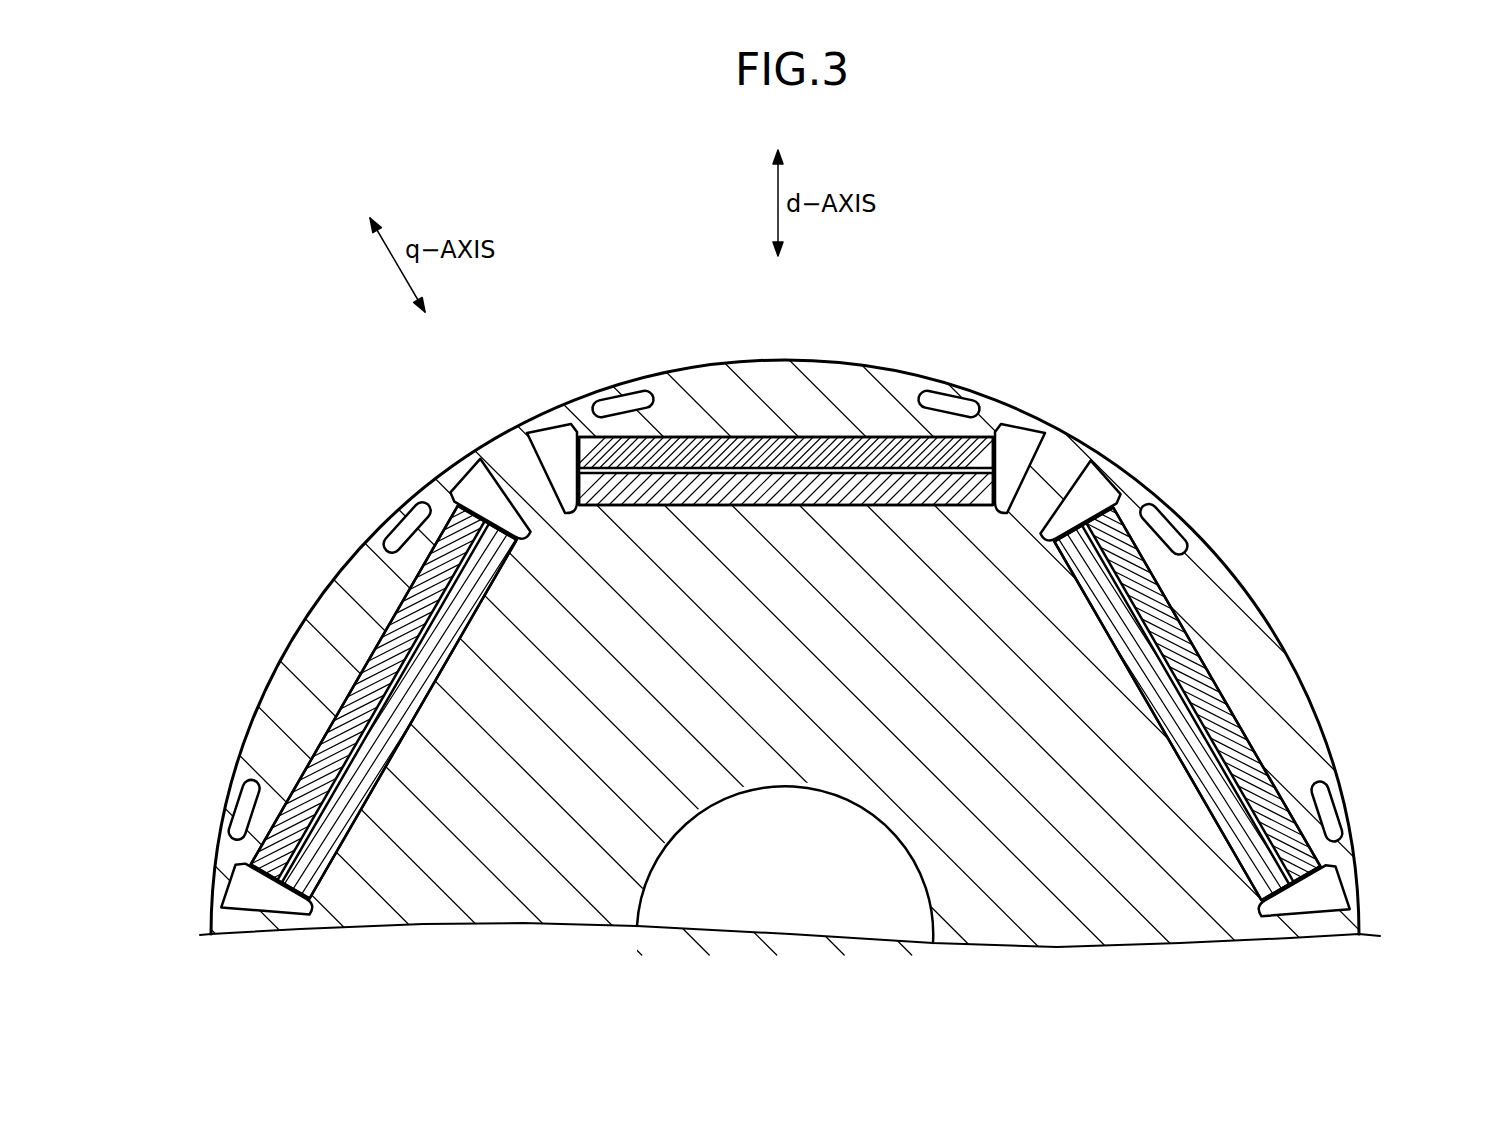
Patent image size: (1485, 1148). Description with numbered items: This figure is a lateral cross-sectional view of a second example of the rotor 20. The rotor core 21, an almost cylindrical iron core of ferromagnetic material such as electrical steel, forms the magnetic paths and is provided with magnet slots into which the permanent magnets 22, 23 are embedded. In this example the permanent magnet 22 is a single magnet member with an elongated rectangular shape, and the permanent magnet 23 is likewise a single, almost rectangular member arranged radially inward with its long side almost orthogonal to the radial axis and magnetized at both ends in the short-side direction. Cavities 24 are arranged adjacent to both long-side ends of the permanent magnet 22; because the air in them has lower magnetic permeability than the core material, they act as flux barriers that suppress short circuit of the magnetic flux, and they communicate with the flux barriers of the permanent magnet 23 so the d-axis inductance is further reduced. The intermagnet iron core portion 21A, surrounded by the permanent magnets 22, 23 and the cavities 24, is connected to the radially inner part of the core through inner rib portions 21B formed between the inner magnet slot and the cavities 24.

The rotor 20 is at (264, 168).
The rotor core 21 is at (720, 386).
The intermagnet iron core portion 21A is at (775, 469).
The inner rib portions 21B is at (574, 469).
The permanent magnet 22 is at (858, 437).
The permanent magnet 23 is at (790, 507).
The cavities 24 is at (551, 452).